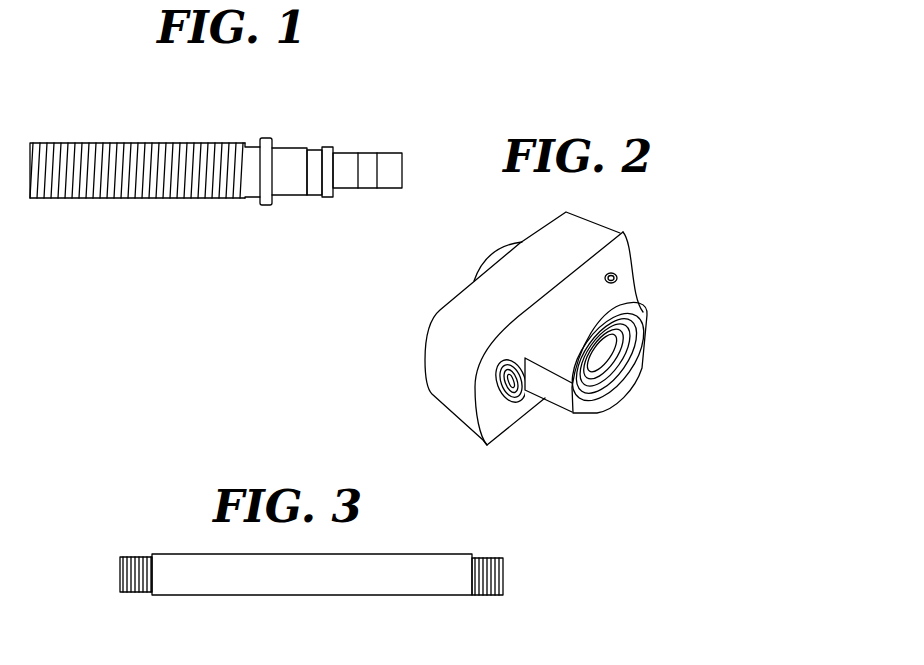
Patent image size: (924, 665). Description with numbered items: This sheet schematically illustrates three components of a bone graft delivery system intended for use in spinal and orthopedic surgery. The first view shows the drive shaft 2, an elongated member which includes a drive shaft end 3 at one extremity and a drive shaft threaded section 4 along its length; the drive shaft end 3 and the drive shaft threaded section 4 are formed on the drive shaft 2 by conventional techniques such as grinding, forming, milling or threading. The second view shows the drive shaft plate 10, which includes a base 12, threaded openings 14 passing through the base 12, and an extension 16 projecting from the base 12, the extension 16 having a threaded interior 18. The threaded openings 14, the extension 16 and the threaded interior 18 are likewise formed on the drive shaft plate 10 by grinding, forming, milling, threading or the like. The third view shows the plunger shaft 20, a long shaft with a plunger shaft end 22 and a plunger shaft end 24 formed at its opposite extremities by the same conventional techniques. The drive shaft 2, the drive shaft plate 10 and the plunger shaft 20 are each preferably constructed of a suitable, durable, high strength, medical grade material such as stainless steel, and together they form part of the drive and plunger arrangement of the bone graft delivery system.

In FIG. 1, the drive shaft 2 is at (273, 116).
In FIG. 1, the drive shaft end 3 is at (390, 170).
In FIG. 1, the drive shaft threaded section 4 is at (125, 117).
In FIG. 2, the drive shaft plate 10 is at (651, 304).
In FIG. 2, the base 12 is at (622, 235).
In FIG. 2, the threaded openings 14 is at (619, 281).
In FIG. 2, the extension 16 is at (643, 355).
In FIG. 2, the threaded interior 18 is at (600, 361).
In FIG. 3, the plunger shaft 20 is at (349, 572).
In FIG. 3, the plunger shaft end 22 is at (505, 568).
In FIG. 3, the plunger shaft end 24 is at (118, 575).